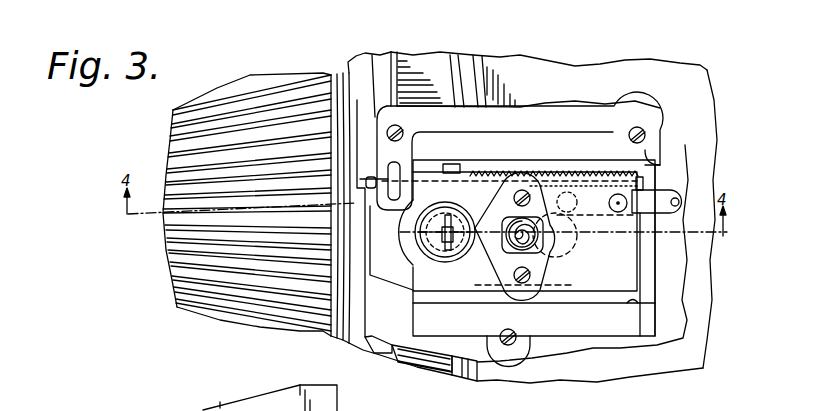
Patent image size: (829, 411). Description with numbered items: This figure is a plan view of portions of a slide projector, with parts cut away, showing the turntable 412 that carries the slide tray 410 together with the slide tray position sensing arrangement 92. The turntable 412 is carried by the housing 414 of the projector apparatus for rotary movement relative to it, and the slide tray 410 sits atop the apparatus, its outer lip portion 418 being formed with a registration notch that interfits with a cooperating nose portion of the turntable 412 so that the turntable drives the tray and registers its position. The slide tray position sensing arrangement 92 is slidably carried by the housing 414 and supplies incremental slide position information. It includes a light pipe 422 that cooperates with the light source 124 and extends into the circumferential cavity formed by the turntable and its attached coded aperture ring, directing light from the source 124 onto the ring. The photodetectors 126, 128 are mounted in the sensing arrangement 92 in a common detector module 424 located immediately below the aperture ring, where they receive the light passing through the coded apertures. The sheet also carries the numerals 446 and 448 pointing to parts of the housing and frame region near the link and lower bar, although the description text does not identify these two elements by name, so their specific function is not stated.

The slide tray 410 is at (340, 69).
The outer lip portion 418 is at (380, 57).
The turntable 412 is at (443, 76).
The housing 414 is at (592, 77).
The link member 446 is at (652, 166).
The frame bottom bar 448 is at (631, 305).
The light pipe 422 is at (482, 227).
The photodetector 126 is at (450, 222).
The photodetector 128 is at (425, 268).
The light source 124 is at (538, 243).
The detector module 424 is at (385, 218).
The slide tray position sensing arrangement 92 is at (483, 277).